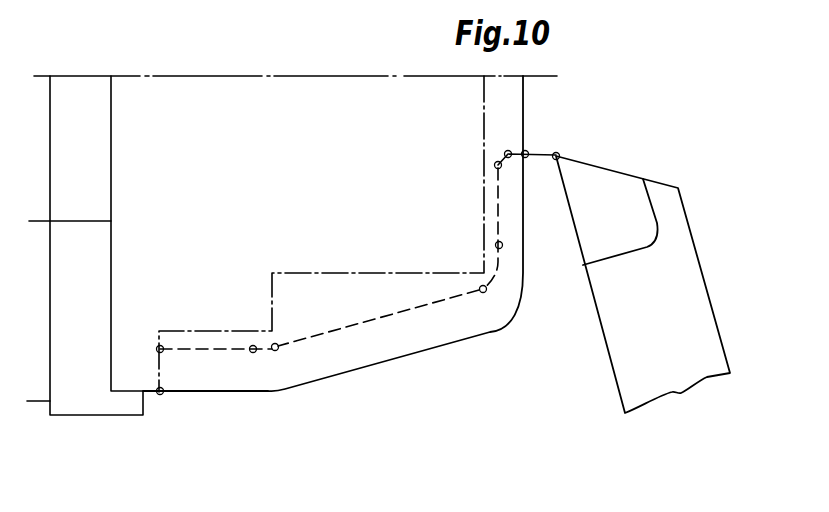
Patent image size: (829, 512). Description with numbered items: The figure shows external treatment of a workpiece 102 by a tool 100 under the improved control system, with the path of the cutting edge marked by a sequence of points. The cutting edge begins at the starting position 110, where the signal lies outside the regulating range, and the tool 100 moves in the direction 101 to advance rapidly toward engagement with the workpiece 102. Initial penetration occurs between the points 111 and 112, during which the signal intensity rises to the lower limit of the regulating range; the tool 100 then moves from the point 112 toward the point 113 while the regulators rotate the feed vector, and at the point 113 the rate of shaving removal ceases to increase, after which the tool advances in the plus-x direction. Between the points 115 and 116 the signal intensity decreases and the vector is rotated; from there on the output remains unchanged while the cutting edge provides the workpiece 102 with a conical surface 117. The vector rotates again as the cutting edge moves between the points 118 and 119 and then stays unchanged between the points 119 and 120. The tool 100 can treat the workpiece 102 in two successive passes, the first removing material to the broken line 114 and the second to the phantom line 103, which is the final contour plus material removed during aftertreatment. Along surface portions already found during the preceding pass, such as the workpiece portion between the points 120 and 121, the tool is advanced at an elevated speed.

The tool 100 is at (688, 272).
The direction of tool movement 101 is at (582, 157).
The workpiece 102 is at (285, 100).
The phantom line 103 is at (298, 273).
The starting position 110 is at (559, 154).
The point of initial penetration 111 is at (527, 151).
The point 112 is at (510, 151).
The point 113 is at (494, 165).
The broken line 114 is at (498, 202).
The point 115 is at (502, 246).
The point 116 is at (485, 292).
The conical surface 117 is at (343, 328).
The point 118 is at (276, 351).
The point 119 is at (252, 353).
The point 120 is at (162, 352).
The point 121 is at (159, 395).